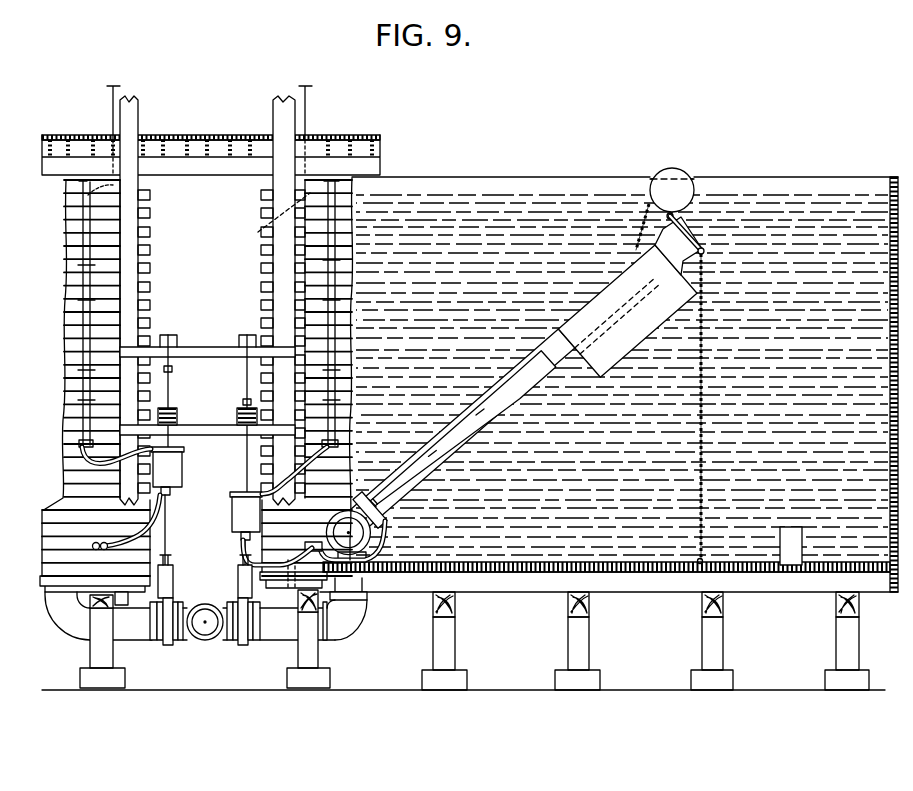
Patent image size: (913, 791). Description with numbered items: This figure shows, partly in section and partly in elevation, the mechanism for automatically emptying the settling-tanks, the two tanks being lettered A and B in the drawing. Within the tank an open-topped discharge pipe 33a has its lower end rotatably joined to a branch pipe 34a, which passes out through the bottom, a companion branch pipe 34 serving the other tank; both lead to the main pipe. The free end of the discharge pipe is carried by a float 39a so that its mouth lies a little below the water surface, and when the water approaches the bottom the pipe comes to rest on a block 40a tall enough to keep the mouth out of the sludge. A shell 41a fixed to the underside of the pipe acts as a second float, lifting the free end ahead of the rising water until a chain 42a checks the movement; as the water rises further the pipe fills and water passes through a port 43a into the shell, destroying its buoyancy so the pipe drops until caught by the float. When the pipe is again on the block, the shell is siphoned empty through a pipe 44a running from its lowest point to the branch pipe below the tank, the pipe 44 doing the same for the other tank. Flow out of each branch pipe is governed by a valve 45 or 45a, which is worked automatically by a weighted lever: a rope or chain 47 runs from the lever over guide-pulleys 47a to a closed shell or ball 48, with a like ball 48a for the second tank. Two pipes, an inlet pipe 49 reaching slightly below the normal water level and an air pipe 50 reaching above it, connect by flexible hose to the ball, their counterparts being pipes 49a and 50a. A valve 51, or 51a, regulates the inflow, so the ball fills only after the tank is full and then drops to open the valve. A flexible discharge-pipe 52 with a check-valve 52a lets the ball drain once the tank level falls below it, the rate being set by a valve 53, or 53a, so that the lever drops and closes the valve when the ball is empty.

The tank / column A is at (470, 433).
The column B is at (151, 207).
The pipe 33a is at (486, 386).
The branch pipe 34 is at (137, 628).
The branch pipe 34a is at (275, 635).
The float 39a is at (683, 163).
The block 40a is at (792, 547).
The shell 41a is at (627, 311).
The chain 42a is at (703, 412).
The port 43a is at (658, 253).
The pipe 44 is at (134, 596).
The pipe 44a is at (506, 418).
The valve 45 is at (173, 595).
The valve 45a is at (240, 598).
The rope or chain 47 is at (169, 392).
The guide-pulleys 47a is at (246, 395).
The closed shell or ball 48 is at (182, 467).
The closed shell or ball 48a is at (240, 508).
The pipe 49 is at (83, 305).
The pipe 49a is at (328, 290).
The pipe 50 is at (90, 330).
The pipe 50a is at (335, 310).
The valve 51 is at (63, 208).
The valve 51a is at (270, 219).
The flexible discharge-pipe 52 is at (168, 518).
The check-valve 52a is at (246, 553).
The valve 53 is at (93, 547).
The valve 53a is at (312, 542).